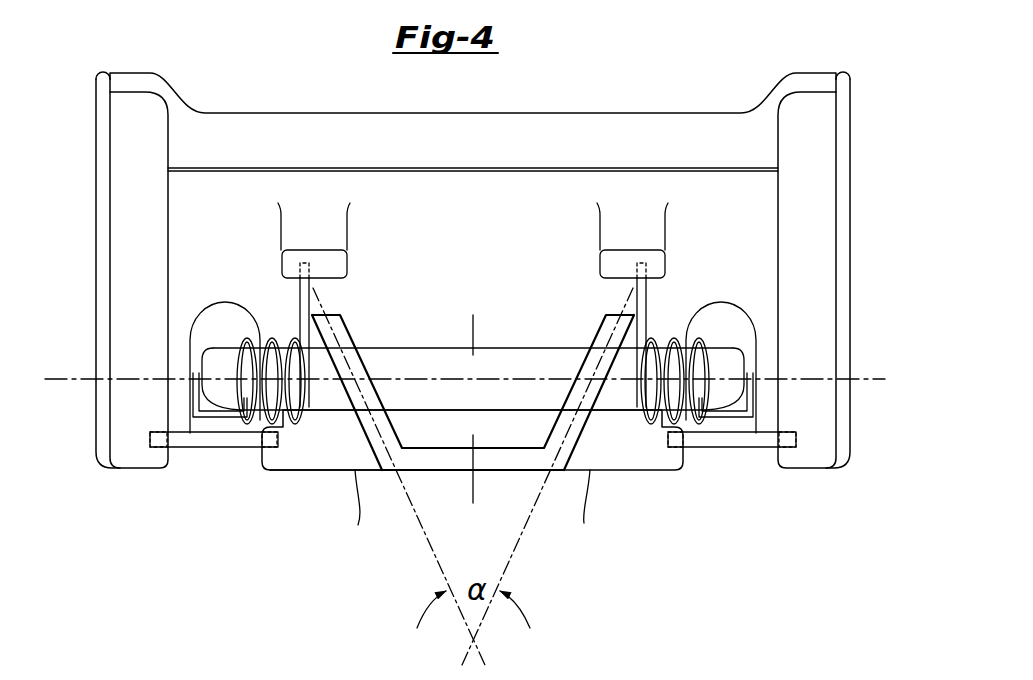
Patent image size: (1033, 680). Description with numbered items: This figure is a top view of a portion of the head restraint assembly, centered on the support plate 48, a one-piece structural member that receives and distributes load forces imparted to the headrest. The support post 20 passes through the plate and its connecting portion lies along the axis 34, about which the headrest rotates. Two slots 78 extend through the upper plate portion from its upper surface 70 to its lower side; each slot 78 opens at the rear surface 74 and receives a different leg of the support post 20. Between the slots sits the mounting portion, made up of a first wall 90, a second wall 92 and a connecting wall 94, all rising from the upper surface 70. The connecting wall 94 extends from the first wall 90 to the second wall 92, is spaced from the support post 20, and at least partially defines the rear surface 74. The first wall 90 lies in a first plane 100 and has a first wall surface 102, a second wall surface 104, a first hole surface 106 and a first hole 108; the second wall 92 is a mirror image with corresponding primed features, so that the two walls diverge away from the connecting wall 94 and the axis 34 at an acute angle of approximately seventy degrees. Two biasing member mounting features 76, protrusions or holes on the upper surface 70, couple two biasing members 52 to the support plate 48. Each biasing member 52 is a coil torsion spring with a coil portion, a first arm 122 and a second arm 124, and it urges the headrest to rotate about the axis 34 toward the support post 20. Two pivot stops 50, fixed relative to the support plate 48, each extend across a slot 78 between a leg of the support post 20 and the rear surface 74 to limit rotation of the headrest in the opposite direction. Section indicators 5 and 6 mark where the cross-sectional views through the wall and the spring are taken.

The support plate 48 is at (98, 76).
The axis 34 is at (78, 378).
The support post 20 is at (210, 364).
The biasing member 52 is at (259, 308).
The biasing member mounting feature 76 is at (347, 256).
The second arm 124 is at (300, 300).
The first arm 122 is at (193, 418).
The pivot stop 50 is at (240, 449).
The slot 78 is at (193, 452).
The upper surface 70 is at (627, 460).
The rear surface 74 is at (304, 472).
The first wall 90 is at (345, 314).
The second wall 92 is at (607, 313).
The connecting wall 94 is at (452, 470).
The first wall surface 102 is at (328, 316).
The first hole surface 106 is at (380, 357).
The first hole 108 is at (355, 420).
The second wall surface 104 is at (358, 525).
The first plane 100 is at (420, 534).
The section line 5 is at (364, 328).
The section line 6 is at (476, 330).